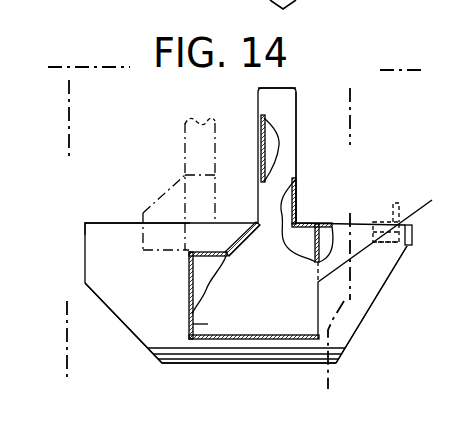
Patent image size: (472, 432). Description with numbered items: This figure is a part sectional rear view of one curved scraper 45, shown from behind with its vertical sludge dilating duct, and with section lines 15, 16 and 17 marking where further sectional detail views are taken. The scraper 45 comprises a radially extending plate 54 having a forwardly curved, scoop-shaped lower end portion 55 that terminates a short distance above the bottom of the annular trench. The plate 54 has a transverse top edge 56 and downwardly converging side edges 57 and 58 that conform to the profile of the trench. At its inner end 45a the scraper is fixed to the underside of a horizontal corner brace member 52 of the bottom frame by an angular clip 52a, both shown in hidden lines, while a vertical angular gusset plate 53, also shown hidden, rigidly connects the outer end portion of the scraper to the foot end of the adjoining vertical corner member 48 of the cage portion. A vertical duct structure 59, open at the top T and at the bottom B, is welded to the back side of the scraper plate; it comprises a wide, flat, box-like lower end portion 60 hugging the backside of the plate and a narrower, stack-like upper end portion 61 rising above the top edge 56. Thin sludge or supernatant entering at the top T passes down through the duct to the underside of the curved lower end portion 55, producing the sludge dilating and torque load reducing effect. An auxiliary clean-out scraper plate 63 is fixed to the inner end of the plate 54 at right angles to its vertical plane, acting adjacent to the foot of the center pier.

The section line 15- 15 is at (358, 88).
The section line 16- 16 is at (69, 80).
The section line 17- 17 is at (60, 60).
The scraper 45 is at (76, 270).
The inner end of scraper 45a is at (469, 198).
The vertical corner member 48 is at (185, 136).
The horizontal brace member 52 is at (396, 203).
The angular clip 52a is at (388, 238).
The vertical angular gusset plate 53 is at (164, 193).
The radially extending plate 54 is at (163, 305).
The scoop-shaped lower end portion 55 is at (212, 343).
The transverse top edge 56 is at (96, 223).
The side edge 57 is at (125, 322).
The side edge 58 is at (359, 321).
The vertical duct structure 59 is at (232, 230).
The box like lower end portion 60 is at (271, 305).
The stack like upper end portion 61 is at (289, 155).
The auxiliary clean-out scraper plate 63 is at (411, 232).
The top opening of duct T is at (279, 88).
The bottom opening of duct B is at (277, 340).